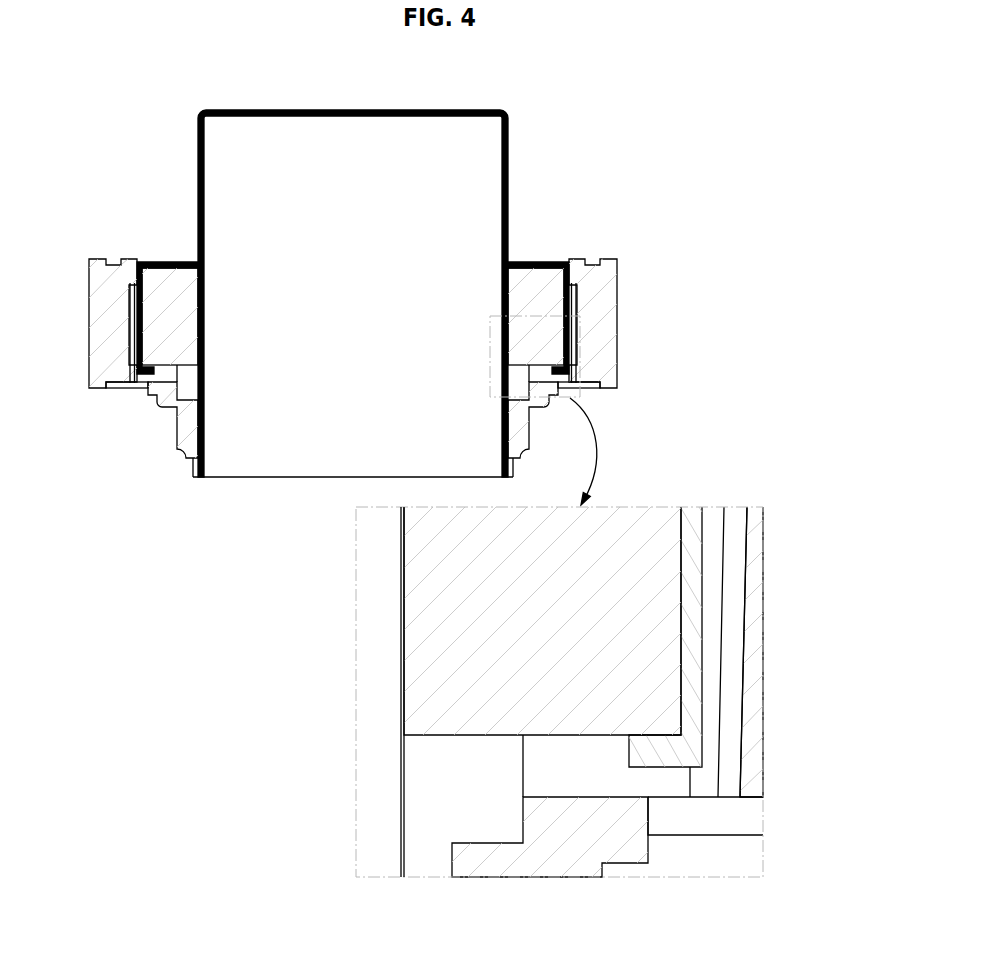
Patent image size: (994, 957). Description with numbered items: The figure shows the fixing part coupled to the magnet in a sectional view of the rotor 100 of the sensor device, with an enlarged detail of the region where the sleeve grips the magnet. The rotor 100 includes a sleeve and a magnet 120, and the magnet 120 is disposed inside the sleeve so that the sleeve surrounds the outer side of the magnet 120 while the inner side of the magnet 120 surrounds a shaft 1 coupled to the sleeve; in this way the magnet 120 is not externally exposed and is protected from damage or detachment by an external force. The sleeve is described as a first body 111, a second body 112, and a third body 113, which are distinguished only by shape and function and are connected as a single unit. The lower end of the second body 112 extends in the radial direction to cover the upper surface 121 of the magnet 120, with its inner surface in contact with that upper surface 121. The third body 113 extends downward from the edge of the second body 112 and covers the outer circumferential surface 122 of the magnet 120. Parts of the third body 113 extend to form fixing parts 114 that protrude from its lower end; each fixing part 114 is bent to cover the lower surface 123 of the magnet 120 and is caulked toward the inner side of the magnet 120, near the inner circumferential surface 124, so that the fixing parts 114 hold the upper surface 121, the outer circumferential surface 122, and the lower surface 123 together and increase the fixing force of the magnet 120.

The shaft 1 is at (204, 137).
The rotor 100 is at (188, 164).
The first body 111 is at (509, 140).
The second body 112 is at (549, 262).
The third body 113 is at (572, 302).
The fixing part 114 is at (566, 372).
The magnet 120 is at (136, 324).
The upper surface 121 is at (526, 270).
The outer circumferential surface 122 is at (580, 270).
The lower surface 123 is at (562, 364).
The inner circumferential surface 124 is at (488, 350).